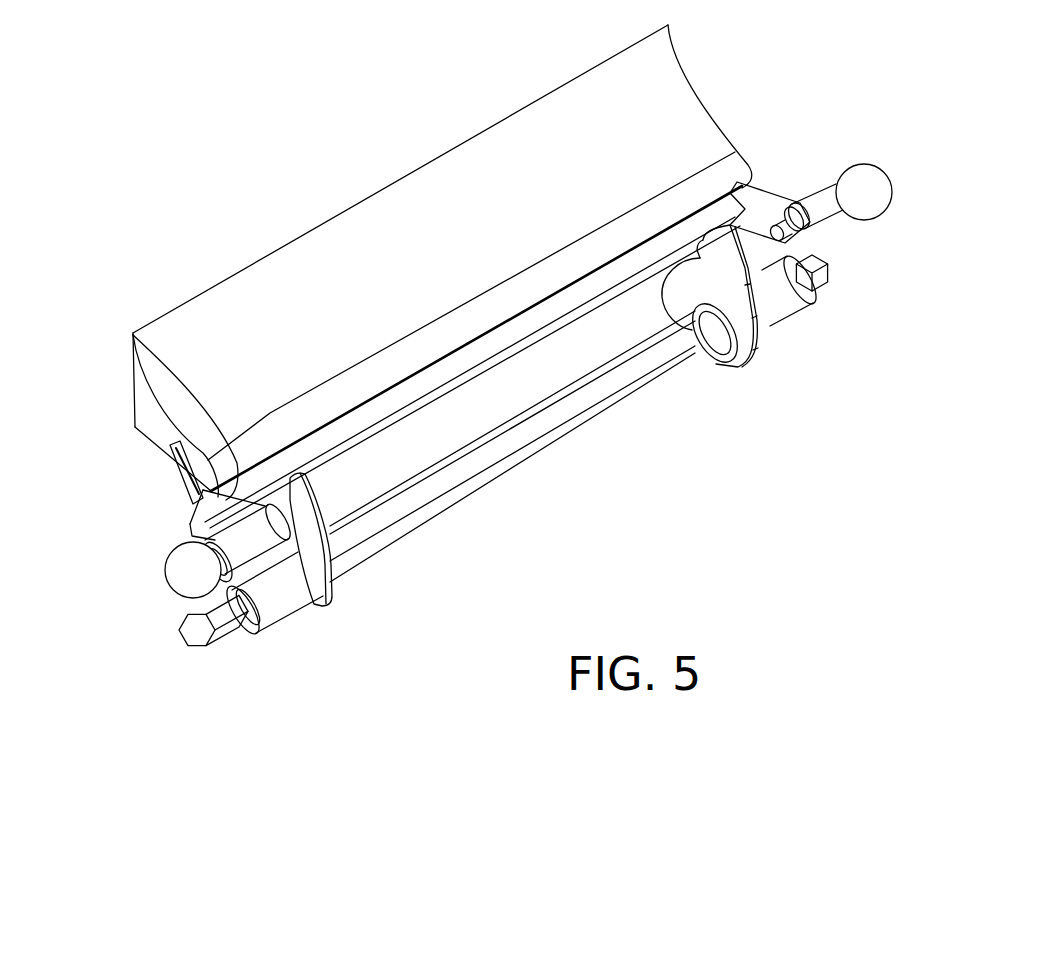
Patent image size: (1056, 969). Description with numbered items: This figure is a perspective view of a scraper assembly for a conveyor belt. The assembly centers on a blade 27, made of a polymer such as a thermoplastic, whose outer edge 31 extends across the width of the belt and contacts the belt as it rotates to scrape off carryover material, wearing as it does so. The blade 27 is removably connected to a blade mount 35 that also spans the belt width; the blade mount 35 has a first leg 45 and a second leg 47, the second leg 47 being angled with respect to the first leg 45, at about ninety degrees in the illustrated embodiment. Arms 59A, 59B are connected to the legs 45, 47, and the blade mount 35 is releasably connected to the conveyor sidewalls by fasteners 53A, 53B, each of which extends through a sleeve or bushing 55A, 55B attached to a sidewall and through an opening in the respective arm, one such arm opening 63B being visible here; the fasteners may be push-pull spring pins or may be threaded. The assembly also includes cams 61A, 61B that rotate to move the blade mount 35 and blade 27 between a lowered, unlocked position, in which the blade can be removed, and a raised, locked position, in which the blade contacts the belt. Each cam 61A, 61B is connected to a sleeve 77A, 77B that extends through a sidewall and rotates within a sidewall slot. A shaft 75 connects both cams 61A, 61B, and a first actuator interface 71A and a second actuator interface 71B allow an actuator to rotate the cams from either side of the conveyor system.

The blade 27 is at (253, 310).
The outer edge 31 is at (402, 175).
The arm 59A is at (133, 333).
The first leg 45 is at (168, 460).
The blade mount 35 is at (183, 530).
The second leg 47 is at (178, 532).
The fastener 53A is at (181, 578).
The sleeve or bushing 55A is at (328, 610).
The cam 61A is at (330, 574).
The first actuator interface 71A is at (195, 646).
The sleeve 77A is at (281, 604).
The shaft 75 is at (573, 440).
The cam 61B is at (757, 347).
The sleeve 77B is at (783, 317).
The second actuator interface 71B is at (827, 283).
The arm opening 63B is at (803, 242).
The sleeve or bushing 55B is at (833, 210).
The fastener 53B is at (870, 168).
The arm 59B is at (760, 212).